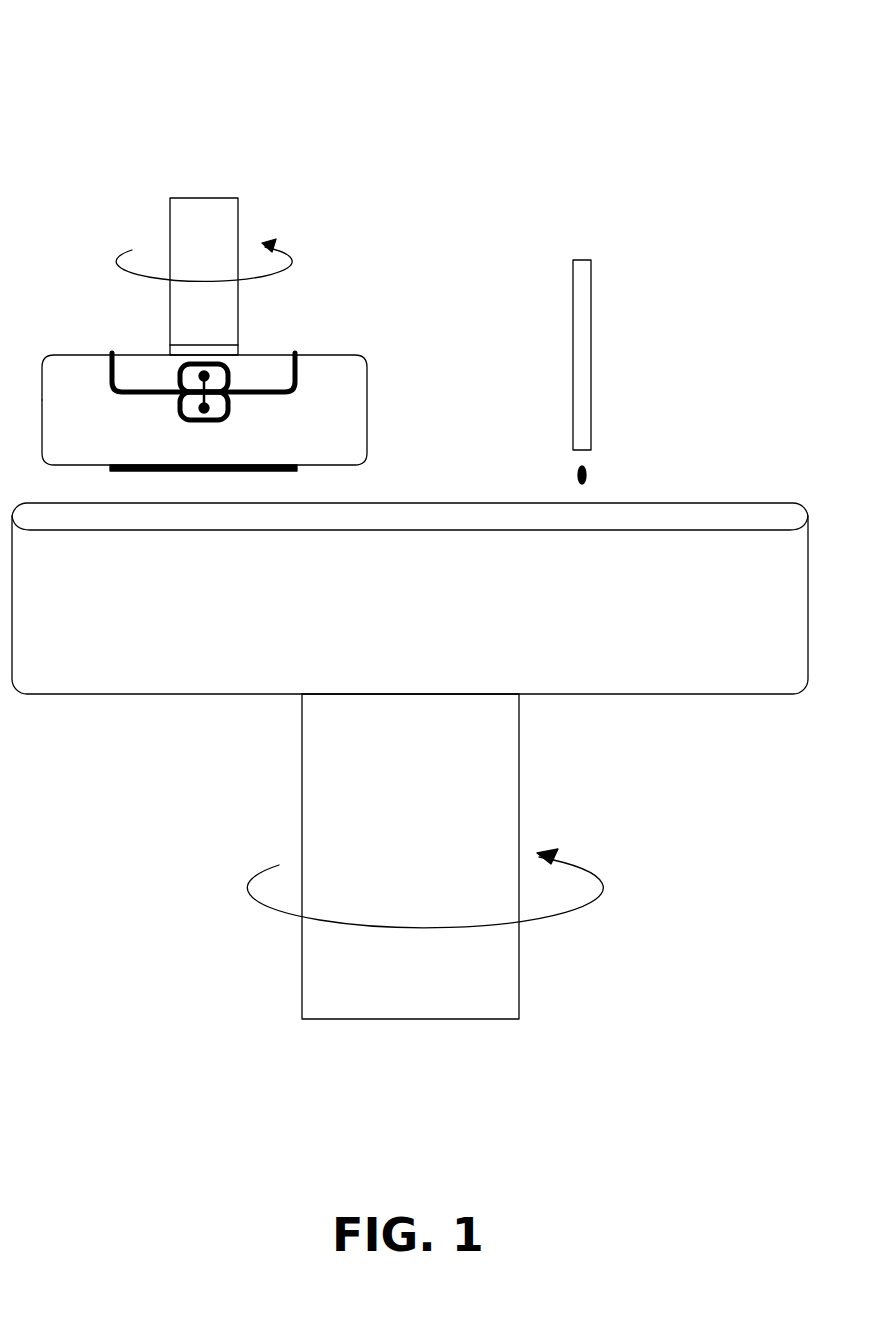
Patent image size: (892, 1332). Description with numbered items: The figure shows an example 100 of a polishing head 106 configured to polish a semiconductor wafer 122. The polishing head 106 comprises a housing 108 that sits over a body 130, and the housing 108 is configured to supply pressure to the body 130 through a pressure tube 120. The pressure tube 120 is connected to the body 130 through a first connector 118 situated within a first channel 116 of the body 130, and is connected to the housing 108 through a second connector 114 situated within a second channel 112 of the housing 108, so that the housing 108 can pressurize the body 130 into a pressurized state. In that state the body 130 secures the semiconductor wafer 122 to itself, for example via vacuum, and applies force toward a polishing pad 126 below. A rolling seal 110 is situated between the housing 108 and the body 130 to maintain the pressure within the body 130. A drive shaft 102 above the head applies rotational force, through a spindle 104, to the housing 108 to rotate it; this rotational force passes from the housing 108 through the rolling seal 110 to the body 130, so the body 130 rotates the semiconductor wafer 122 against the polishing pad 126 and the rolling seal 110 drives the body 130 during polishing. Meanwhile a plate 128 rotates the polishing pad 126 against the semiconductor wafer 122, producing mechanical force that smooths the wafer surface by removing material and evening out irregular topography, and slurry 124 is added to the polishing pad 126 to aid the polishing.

The example 100 is at (138, 66).
The drive shaft 102 is at (238, 213).
The spindle 104 is at (238, 353).
The polishing head 106 is at (357, 339).
The housing 108 is at (162, 352).
The rolling seal 110 is at (105, 355).
The second channel 112 is at (178, 376).
The second connector 114 is at (211, 376).
The first channel 116 is at (227, 414).
The first connector 118 is at (205, 418).
The pressure tube 120 is at (200, 398).
The semiconductor wafer 122 is at (295, 470).
The slurry 124 is at (592, 357).
The polishing pad 126 is at (680, 503).
The plate 128 is at (598, 694).
The body 130 is at (367, 415).